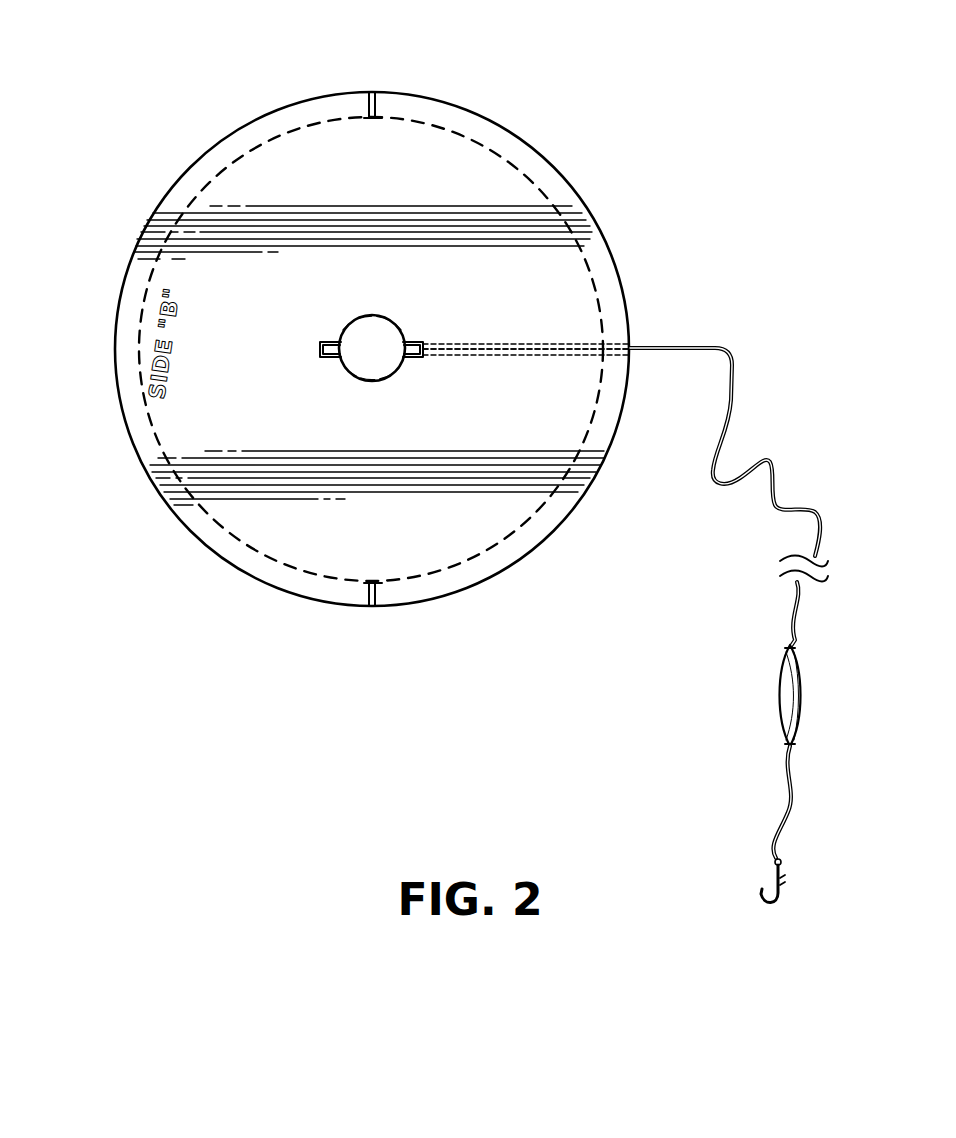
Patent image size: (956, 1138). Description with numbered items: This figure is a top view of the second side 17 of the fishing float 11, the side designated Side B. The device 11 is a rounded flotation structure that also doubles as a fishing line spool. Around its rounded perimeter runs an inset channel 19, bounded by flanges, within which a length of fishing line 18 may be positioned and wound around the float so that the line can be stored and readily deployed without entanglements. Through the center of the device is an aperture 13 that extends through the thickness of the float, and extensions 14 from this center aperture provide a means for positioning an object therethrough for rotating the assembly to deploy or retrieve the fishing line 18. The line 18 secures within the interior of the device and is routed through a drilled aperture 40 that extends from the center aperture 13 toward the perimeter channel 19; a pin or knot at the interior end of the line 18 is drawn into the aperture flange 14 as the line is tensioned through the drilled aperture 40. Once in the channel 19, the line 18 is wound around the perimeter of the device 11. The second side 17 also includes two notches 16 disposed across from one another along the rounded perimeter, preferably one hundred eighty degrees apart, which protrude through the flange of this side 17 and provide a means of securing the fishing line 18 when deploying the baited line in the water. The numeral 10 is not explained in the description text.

The hidden channel / line path 10 is at (460, 352).
The fishing float 11 is at (98, 123).
The aperture 13 is at (398, 316).
The extensions 14 is at (328, 357).
The notches 16 is at (381, 98).
The second side 17 is at (533, 212).
The fishing line 18 is at (736, 360).
The inset channel 19 is at (558, 523).
The drilled aperture 40 is at (500, 342).